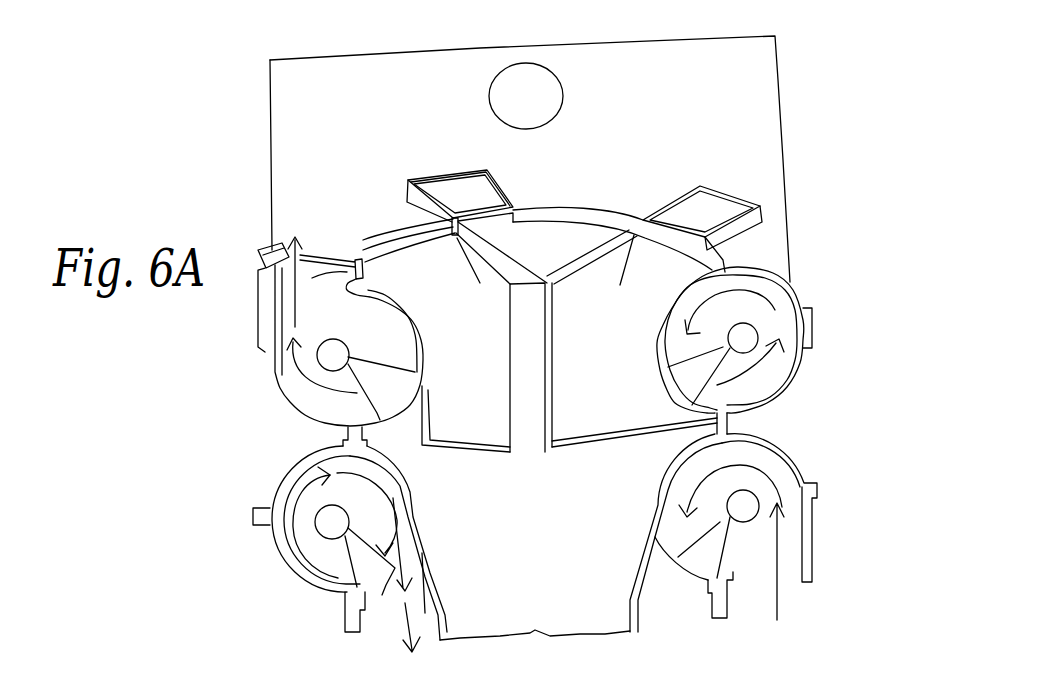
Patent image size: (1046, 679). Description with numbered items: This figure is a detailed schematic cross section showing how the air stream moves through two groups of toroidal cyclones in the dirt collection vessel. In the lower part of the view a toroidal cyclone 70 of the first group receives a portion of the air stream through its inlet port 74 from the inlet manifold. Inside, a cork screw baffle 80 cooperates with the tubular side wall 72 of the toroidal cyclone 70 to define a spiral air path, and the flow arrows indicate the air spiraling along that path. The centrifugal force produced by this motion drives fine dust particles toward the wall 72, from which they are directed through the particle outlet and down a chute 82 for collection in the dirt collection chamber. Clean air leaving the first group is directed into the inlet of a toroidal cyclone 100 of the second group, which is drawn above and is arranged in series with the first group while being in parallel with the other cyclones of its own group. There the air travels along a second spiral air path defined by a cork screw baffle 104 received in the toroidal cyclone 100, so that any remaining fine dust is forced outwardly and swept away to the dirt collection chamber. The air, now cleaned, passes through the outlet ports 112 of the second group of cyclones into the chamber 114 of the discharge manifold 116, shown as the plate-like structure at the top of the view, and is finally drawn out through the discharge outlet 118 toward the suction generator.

The toroidal cyclone 70 is at (756, 504).
The tubular side wall 72 is at (763, 436).
The inlet port 74 is at (787, 590).
The cork screw baffle 80 is at (287, 527).
The chute 82 is at (563, 580).
The toroidal cyclone 100 is at (818, 265).
The cork screw baffle 104 is at (313, 397).
The outlet port 112 is at (312, 252).
The chamber 114 is at (780, 72).
The discharge manifold 116 is at (303, 136).
The discharge outlet 118 is at (555, 62).